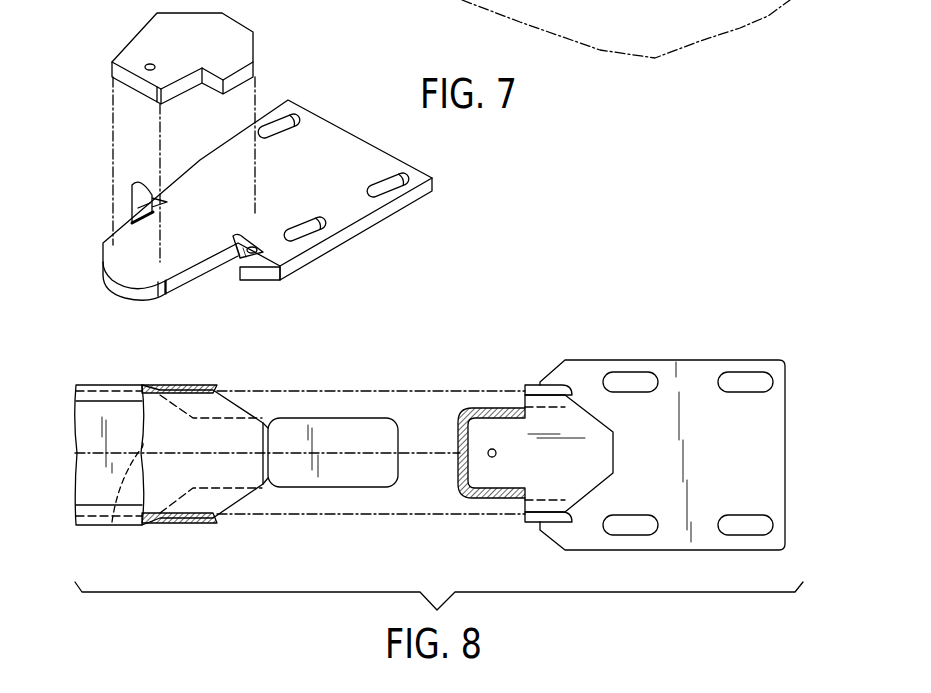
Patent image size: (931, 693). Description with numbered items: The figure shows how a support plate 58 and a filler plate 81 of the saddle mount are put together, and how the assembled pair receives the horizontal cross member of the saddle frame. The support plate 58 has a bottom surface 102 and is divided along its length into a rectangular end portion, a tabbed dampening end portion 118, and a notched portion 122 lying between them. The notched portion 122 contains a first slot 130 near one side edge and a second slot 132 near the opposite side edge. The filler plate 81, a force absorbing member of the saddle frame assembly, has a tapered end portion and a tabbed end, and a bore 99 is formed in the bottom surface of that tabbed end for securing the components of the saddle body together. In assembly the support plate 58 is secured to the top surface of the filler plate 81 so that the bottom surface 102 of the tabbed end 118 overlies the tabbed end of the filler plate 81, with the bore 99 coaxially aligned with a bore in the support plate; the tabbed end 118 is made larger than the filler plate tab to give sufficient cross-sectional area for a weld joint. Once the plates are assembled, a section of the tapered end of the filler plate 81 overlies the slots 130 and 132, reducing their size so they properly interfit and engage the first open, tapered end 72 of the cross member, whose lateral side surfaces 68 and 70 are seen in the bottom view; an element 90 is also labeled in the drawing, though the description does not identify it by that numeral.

In FIG. 8, the support plate 58 is at (540, 383).
In FIG. 8, the lateral side surface 68 is at (173, 523).
In FIG. 8, the lateral side surface 70 is at (185, 385).
In FIG. 8, the first open tapered end 72 is at (228, 393).
In FIG. 7, the filler plate 81 is at (209, 46).
In FIG. 8, the filler plate 81 is at (607, 455).
In FIG. 8, the conduit 90 is at (112, 522).
In FIG. 7, the bore 99 is at (148, 64).
In FIG. 8, the bore 99 is at (490, 451).
In FIG. 7, the bottom surface 102 is at (325, 177).
In FIG. 8, the bottom surface 102 is at (700, 367).
In FIG. 7, the tabbed dampening end portion 118 is at (133, 260).
In FIG. 7, the notched portion 122 is at (255, 280).
In FIG. 7, the first slot 130 is at (270, 244).
In FIG. 8, the first slot 130 is at (540, 522).
In FIG. 7, the second slot 132 is at (147, 191).
In FIG. 8, the second slot 132 is at (540, 385).